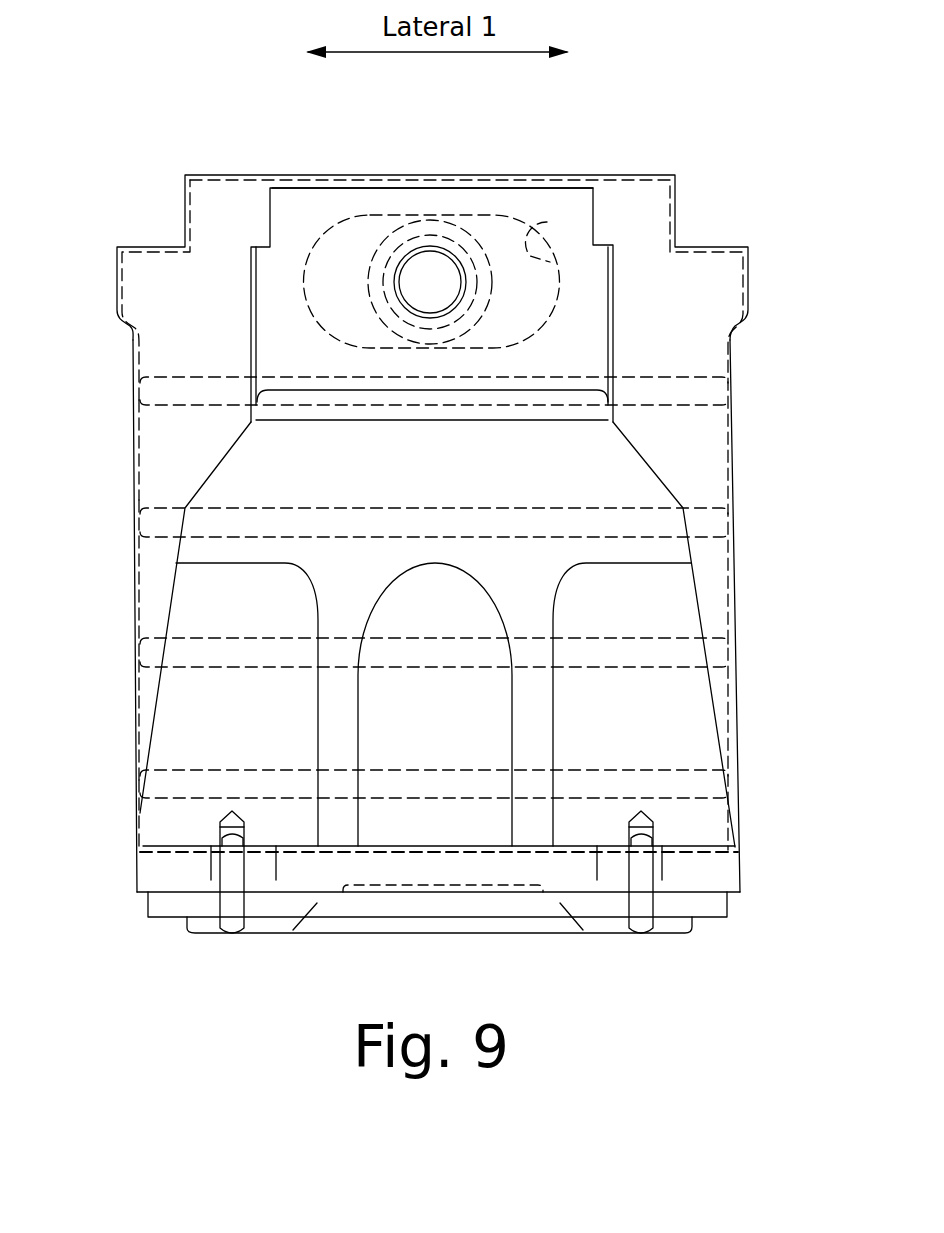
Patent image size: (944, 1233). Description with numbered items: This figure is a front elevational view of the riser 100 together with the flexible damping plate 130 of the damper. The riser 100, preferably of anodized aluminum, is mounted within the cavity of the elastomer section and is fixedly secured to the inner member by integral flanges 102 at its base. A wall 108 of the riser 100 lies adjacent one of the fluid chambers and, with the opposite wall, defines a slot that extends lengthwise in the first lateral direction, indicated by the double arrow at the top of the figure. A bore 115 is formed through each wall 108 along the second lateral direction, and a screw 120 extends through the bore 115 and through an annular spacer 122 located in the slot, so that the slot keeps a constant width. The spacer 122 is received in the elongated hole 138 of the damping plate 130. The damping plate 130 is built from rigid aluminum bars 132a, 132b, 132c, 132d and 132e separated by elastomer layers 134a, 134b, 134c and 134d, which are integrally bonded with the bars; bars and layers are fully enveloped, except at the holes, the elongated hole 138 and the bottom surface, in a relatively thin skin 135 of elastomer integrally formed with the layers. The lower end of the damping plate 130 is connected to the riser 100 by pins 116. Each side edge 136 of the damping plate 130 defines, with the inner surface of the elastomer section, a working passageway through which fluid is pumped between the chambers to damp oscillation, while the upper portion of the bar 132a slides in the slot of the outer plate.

The riser 100 is at (676, 476).
The integral flanges 102 is at (162, 870).
The wall 108 is at (582, 323).
The bore 115 is at (410, 250).
The pins 116 is at (222, 868).
The screw 120 is at (437, 272).
The annular spacer 122 is at (380, 276).
The flexible damping plate 130 is at (150, 238).
The rigid bar 132a is at (117, 278).
The rigid bar 132b is at (132, 428).
The rigid bar 132c is at (137, 567).
The rigid bar 132d is at (137, 690).
The rigid bar 132e is at (137, 818).
The elastomer layer 134a is at (705, 388).
The elastomer layer 134b is at (715, 526).
The elastomer layer 134c is at (730, 640).
The elastomer layer 134d is at (720, 782).
The skin 135 is at (430, 173).
The side edge 136 is at (133, 491).
The elongated hole 138 is at (555, 232).